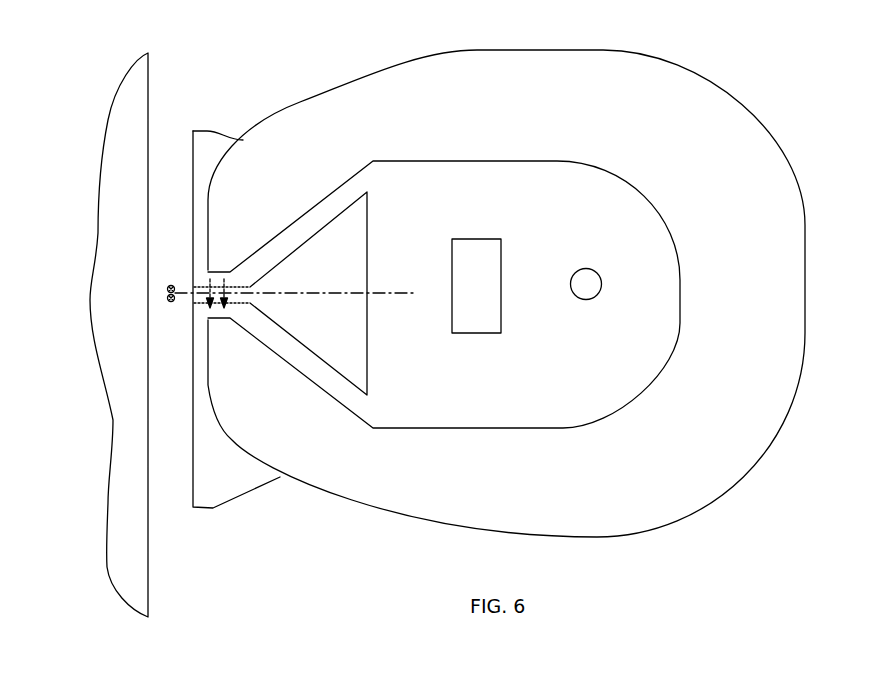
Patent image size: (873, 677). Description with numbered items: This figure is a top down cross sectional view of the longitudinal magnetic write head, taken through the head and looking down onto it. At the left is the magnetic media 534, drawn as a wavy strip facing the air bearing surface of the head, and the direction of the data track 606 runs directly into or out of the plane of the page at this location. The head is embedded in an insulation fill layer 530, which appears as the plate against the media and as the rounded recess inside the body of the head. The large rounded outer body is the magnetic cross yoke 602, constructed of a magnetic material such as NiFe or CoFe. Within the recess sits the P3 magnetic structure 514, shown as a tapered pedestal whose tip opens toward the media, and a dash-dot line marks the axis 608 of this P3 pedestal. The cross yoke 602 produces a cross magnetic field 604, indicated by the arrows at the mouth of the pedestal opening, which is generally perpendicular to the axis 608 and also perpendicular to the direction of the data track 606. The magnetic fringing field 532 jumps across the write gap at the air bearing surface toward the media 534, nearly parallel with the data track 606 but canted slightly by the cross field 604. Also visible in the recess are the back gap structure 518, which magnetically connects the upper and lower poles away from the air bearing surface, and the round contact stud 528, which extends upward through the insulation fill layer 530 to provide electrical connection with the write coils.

The magnetic media 534 is at (123, 101).
The insulation fill layer 530 is at (218, 132).
The magnetic cross yoke 602 is at (755, 203).
The P3 magnetic structure 514 is at (350, 242).
The axis of the P3 pedestal 608 is at (333, 293).
The cross magnetic field 604 is at (208, 283).
The magnetic fringing field 532 is at (167, 288).
The data track 606 is at (168, 301).
The back gap structure 518 is at (477, 302).
The contact stud 528 is at (583, 268).